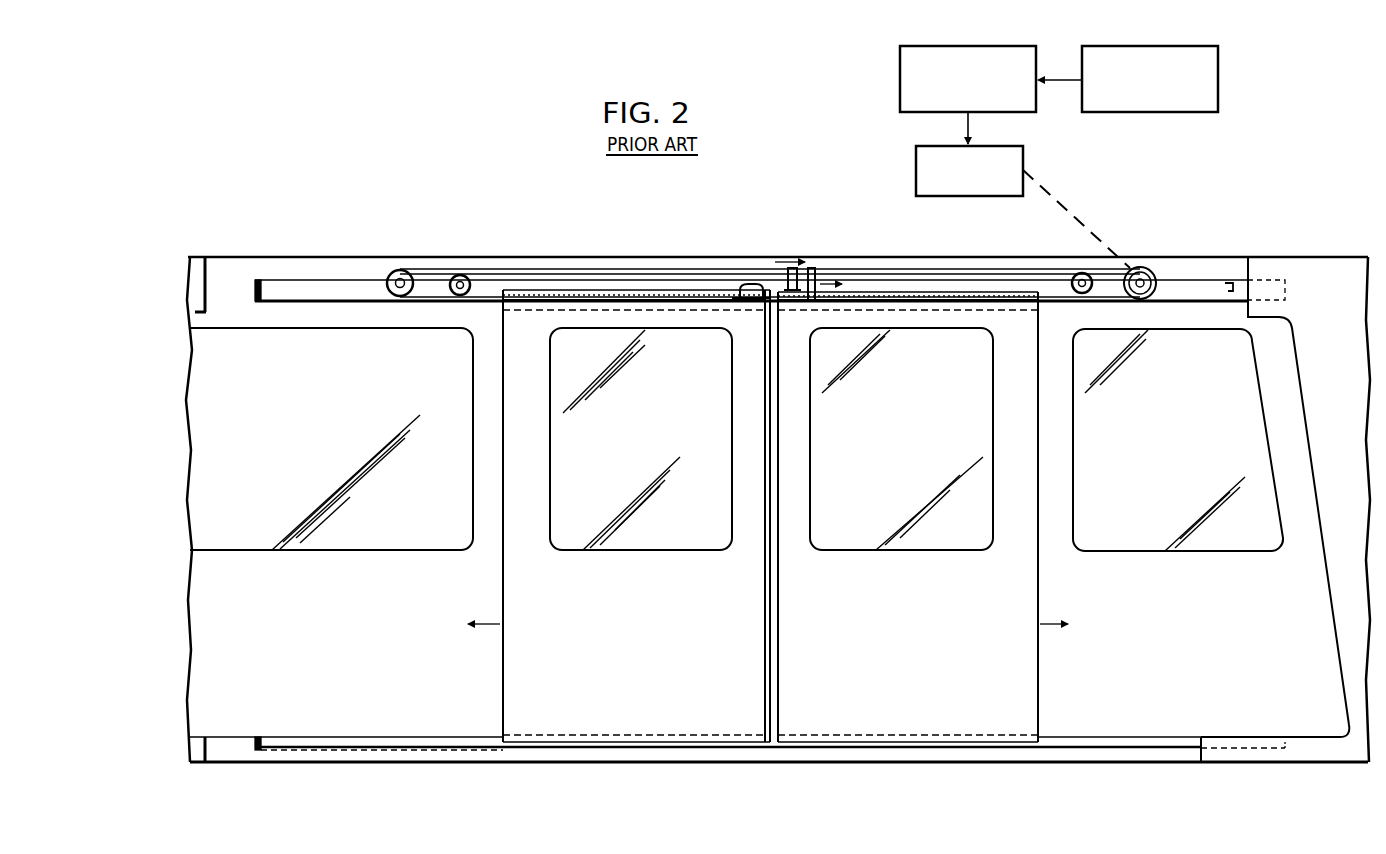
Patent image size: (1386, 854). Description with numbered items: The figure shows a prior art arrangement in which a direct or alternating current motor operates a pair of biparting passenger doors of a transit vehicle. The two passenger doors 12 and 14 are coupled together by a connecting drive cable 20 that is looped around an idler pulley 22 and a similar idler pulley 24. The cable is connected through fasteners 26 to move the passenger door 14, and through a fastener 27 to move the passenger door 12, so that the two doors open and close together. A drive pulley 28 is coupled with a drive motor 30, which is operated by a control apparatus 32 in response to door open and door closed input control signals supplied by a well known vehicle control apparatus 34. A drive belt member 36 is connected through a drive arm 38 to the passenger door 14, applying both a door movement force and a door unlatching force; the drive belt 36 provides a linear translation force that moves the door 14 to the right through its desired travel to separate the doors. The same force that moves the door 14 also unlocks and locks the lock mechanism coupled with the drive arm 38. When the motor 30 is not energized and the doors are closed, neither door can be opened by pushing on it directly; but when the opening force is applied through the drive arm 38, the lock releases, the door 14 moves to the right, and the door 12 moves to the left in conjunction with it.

The passenger door 12 is at (757, 665).
The passenger door 14 is at (1030, 667).
The connecting drive cable 20 is at (950, 277).
The idler pulley 22 is at (1085, 296).
The idler pulley 24 is at (448, 296).
The fasteners 26 is at (813, 300).
The fastener 27 is at (738, 304).
The drive pulley 28 is at (1158, 292).
The drive motor 30 is at (914, 158).
The control apparatus 32 is at (898, 64).
The vehicle control apparatus 34 is at (1220, 72).
The drive belt member 36 is at (1036, 273).
The drive arm 38 is at (802, 271).